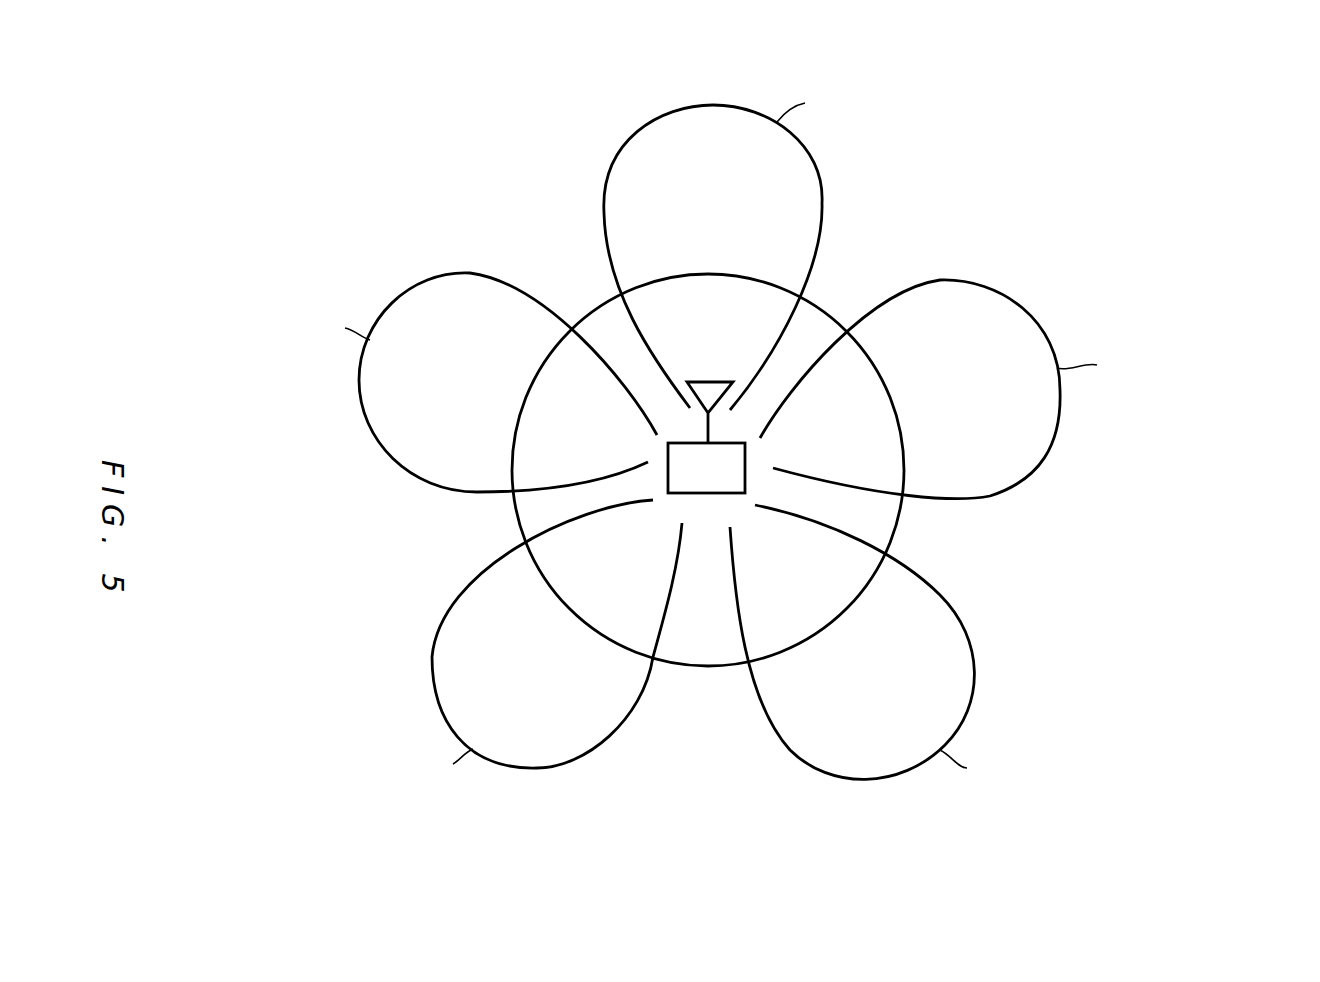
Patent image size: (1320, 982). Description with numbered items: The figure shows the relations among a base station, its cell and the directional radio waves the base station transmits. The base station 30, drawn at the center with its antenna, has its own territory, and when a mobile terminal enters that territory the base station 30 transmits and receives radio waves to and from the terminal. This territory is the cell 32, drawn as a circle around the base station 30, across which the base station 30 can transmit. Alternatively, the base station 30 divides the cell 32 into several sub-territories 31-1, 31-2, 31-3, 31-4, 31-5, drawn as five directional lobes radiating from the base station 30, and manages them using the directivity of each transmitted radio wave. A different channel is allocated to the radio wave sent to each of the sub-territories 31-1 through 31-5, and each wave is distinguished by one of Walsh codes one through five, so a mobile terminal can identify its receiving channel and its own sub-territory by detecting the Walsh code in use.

The base station 30 is at (728, 482).
The cell 32 is at (822, 303).
The sub-territory 31-1 is at (818, 210).
The sub-territory 31-2 is at (1030, 465).
The sub-territory 31-3 is at (977, 675).
The sub-territory 31-4 is at (630, 720).
The sub-territory 31-5 is at (422, 472).